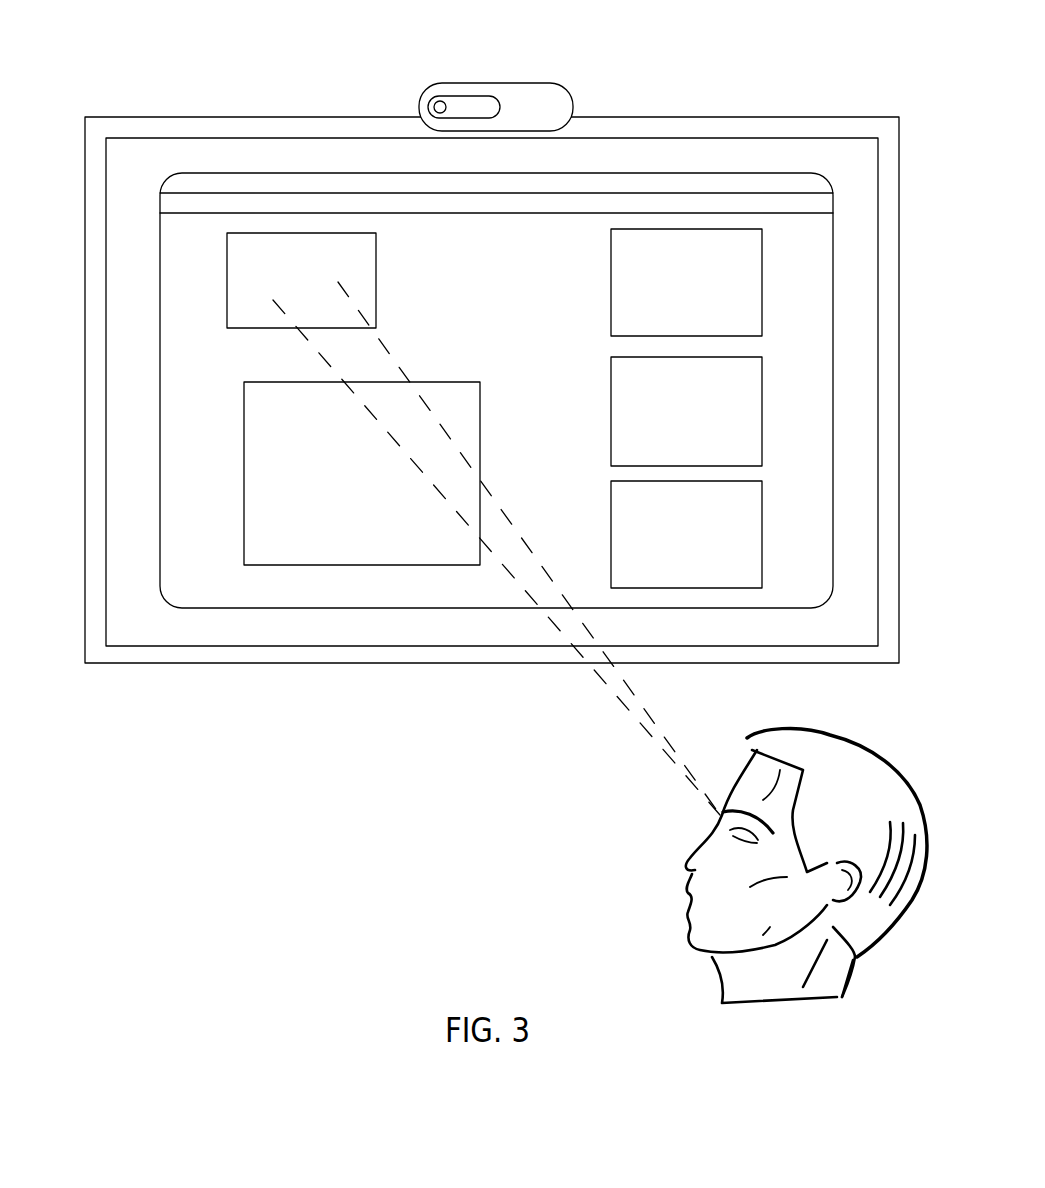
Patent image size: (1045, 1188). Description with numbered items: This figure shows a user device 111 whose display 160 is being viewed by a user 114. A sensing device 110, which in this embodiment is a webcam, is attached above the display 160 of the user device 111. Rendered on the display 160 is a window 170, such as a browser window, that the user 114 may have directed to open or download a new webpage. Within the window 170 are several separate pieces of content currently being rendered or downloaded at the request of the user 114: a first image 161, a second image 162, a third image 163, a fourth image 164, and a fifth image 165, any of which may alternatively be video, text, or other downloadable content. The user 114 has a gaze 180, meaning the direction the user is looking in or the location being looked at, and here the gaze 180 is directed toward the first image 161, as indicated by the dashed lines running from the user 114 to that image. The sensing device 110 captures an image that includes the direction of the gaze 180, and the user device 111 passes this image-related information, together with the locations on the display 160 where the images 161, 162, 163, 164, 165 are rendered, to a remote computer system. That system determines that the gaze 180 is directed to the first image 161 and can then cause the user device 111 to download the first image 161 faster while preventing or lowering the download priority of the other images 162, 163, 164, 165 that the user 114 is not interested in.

The user device 111 is at (176, 70).
The sensing device 110 is at (531, 97).
The display 160 is at (130, 163).
The window 170 is at (618, 173).
The first image 161 is at (283, 250).
The second image 162 is at (718, 260).
The third image 163 is at (729, 396).
The fourth image 164 is at (735, 565).
The fifth image 165 is at (288, 543).
The gaze 180 is at (613, 694).
The user 114 is at (857, 743).